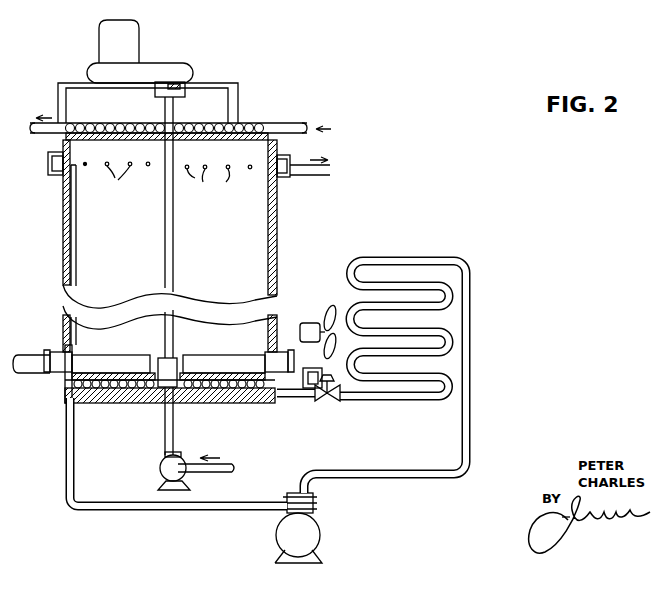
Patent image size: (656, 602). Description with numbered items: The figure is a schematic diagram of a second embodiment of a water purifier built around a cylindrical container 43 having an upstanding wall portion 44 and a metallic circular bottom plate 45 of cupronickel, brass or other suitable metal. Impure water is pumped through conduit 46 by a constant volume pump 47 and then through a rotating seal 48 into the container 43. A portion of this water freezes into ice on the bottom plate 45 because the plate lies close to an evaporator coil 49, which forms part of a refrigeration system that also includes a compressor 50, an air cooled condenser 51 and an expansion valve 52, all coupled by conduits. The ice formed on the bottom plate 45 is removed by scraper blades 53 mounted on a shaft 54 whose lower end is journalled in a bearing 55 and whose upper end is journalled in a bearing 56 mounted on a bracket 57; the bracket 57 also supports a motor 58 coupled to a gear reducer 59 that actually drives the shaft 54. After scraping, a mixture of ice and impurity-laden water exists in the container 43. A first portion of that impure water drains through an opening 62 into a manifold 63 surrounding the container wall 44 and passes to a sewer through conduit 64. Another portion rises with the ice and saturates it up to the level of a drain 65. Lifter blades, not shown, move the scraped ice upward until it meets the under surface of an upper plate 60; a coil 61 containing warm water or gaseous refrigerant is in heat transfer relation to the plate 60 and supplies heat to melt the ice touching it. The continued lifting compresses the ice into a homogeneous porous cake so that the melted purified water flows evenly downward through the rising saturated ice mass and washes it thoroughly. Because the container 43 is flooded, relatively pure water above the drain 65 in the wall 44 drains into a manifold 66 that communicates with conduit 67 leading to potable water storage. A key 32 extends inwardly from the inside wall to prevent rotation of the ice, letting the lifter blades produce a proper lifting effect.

The motor 58 is at (127, 54).
The gear reducer 59 is at (157, 72).
The bearing 56 is at (185, 90).
The bracket 57 is at (238, 100).
The coil 61 is at (133, 123).
The upper plate 60 is at (154, 137).
The manifold 66 is at (48, 154).
The conduit 67 is at (308, 176).
The drain 65 is at (168, 178).
The cylindrical container 43 is at (95, 205).
The key 32 is at (76, 247).
The upstanding wall portion 44 is at (270, 243).
The shaft 54 is at (173, 283).
The air cooled condenser 51 is at (420, 258).
The manifold 63 is at (50, 352).
The opening 62 is at (66, 363).
The scraper blades 53 is at (118, 366).
The expansion valve 52 is at (318, 372).
The conduit 64 is at (32, 364).
The bottom plate 45 is at (120, 376).
The evaporator coil 49 is at (125, 388).
The rotating seal 48 is at (176, 376).
The bearing 55 is at (195, 378).
The conduit 46 is at (173, 440).
The constant volume pump 47 is at (160, 467).
The compressor 50 is at (308, 544).